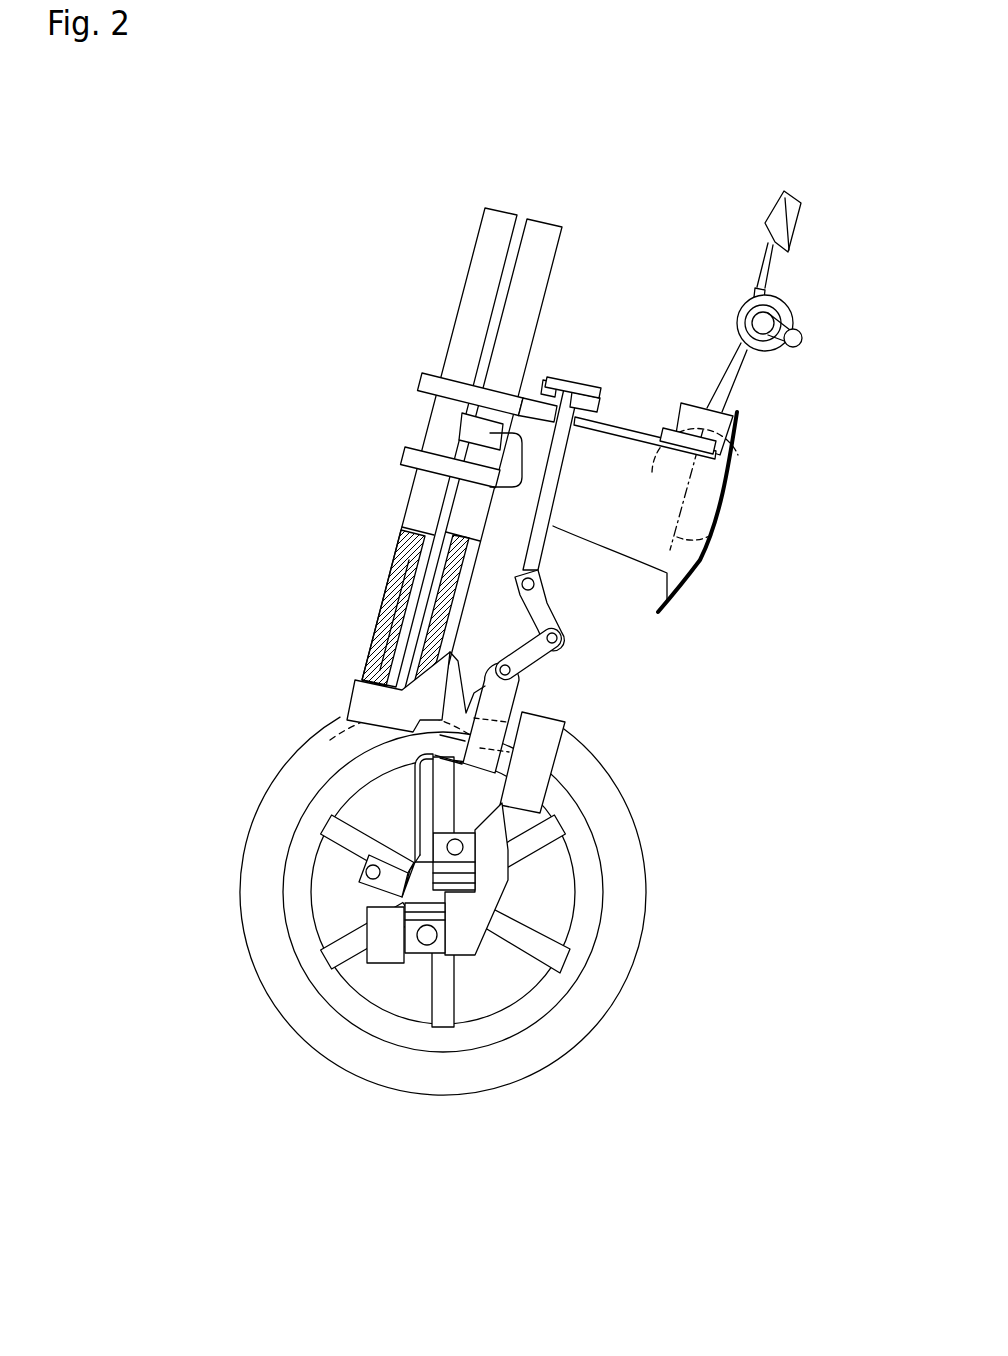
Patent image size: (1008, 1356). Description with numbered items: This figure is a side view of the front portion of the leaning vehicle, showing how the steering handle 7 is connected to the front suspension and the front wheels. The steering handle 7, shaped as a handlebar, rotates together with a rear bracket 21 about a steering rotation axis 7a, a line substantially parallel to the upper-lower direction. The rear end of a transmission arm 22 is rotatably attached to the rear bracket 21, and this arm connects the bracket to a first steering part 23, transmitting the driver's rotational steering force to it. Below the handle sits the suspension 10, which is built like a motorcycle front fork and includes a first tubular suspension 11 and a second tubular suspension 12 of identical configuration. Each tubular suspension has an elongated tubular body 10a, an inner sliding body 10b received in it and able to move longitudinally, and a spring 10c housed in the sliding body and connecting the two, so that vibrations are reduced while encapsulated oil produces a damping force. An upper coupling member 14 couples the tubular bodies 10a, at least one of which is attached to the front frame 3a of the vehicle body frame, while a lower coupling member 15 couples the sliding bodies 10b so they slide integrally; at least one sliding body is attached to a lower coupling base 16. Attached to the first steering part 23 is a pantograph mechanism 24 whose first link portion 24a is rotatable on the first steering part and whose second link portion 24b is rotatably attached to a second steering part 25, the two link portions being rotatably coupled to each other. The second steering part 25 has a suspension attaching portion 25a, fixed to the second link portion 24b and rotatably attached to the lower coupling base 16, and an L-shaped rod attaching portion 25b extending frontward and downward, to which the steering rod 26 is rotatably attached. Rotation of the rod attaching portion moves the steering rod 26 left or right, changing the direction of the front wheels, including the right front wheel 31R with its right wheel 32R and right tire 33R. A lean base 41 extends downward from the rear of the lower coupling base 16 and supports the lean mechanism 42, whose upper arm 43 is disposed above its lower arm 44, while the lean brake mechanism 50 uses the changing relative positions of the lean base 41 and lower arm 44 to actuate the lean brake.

The steering handle 7 is at (801, 290).
The steering rotation axis 7a is at (715, 547).
The suspension 10 is at (353, 486).
The first tubular suspension 11 is at (367, 453).
The tubular body 10a is at (402, 490).
The sliding body 10b is at (397, 550).
The spring 10c is at (378, 598).
The second tubular suspension 12 is at (417, 620).
The upper coupling member 14 is at (410, 457).
The lower coupling member 15 is at (357, 682).
The lower coupling base 16 is at (348, 716).
The front frame 3a is at (523, 508).
The rear bracket 21 is at (727, 425).
The transmission arm 22 is at (700, 507).
The first steering part 23 is at (587, 378).
The pantograph mechanism 24 is at (678, 638).
The first link portion 24a is at (544, 602).
The second link portion 24b is at (542, 662).
The second steering part 25 is at (259, 825).
The suspension attaching portion 25a is at (415, 792).
The rod attaching portion 25b is at (410, 878).
The steering rod 26 is at (362, 873).
The right front wheel 31R is at (443, 978).
The right wheel 32R is at (388, 1050).
The right tire 33R is at (483, 1082).
The lean base 41 is at (508, 880).
The lean mechanism 42 is at (421, 951).
The upper arm 43 is at (475, 848).
The lower arm 44 is at (427, 945).
The lean brake mechanism 50 is at (380, 962).